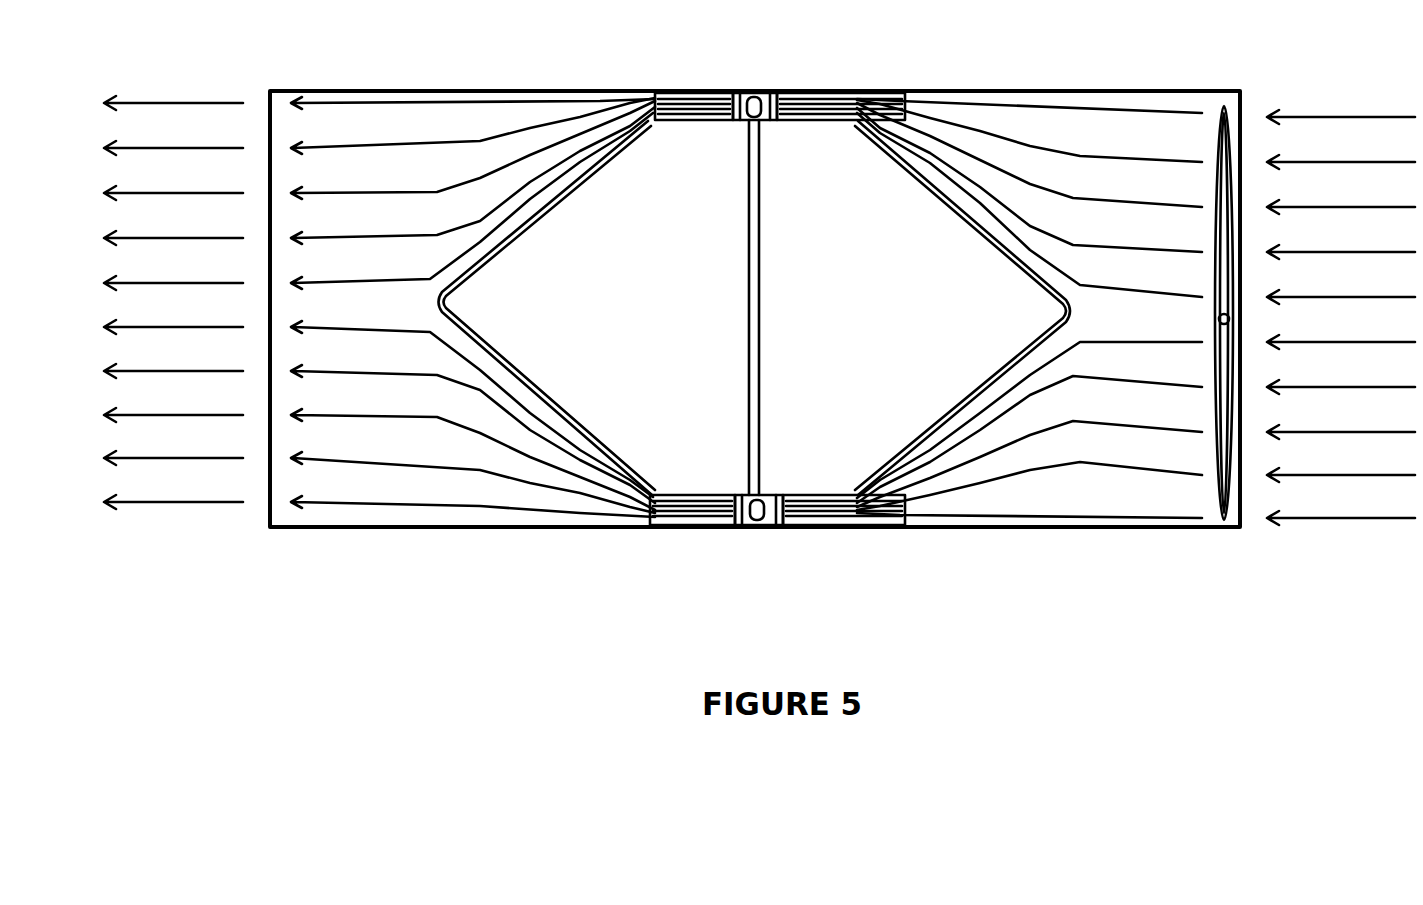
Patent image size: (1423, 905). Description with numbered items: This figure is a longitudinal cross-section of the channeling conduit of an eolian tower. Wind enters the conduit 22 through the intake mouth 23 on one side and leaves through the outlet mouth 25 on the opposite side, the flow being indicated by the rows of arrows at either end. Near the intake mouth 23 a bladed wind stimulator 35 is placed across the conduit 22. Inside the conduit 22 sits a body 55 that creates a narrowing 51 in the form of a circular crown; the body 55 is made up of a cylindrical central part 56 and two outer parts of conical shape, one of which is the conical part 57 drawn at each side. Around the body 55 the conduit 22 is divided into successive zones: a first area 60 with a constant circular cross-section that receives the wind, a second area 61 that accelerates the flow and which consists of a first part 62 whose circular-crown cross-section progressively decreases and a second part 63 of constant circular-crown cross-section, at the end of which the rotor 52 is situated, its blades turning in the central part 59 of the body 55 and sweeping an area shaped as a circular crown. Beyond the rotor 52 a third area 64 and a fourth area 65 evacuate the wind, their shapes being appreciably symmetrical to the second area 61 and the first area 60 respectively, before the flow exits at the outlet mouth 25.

The conduit 22 is at (319, 89).
The intake mouth 23 is at (1243, 135).
The outlet mouth 25 is at (268, 128).
The wind stimulator 35 is at (1203, 89).
The narrowing 51 is at (812, 100).
The rotor 52 is at (748, 92).
The body 55 is at (612, 380).
The cylindrical central part 56 is at (655, 188).
The outer conical part 57 is at (478, 307).
The central part 59 is at (755, 225).
The first area 60 is at (1152, 529).
The second area 61 is at (913, 529).
The first part 62 is at (998, 529).
The second part 63 is at (826, 529).
The third area 64 is at (668, 529).
The fourth area 65 is at (388, 529).